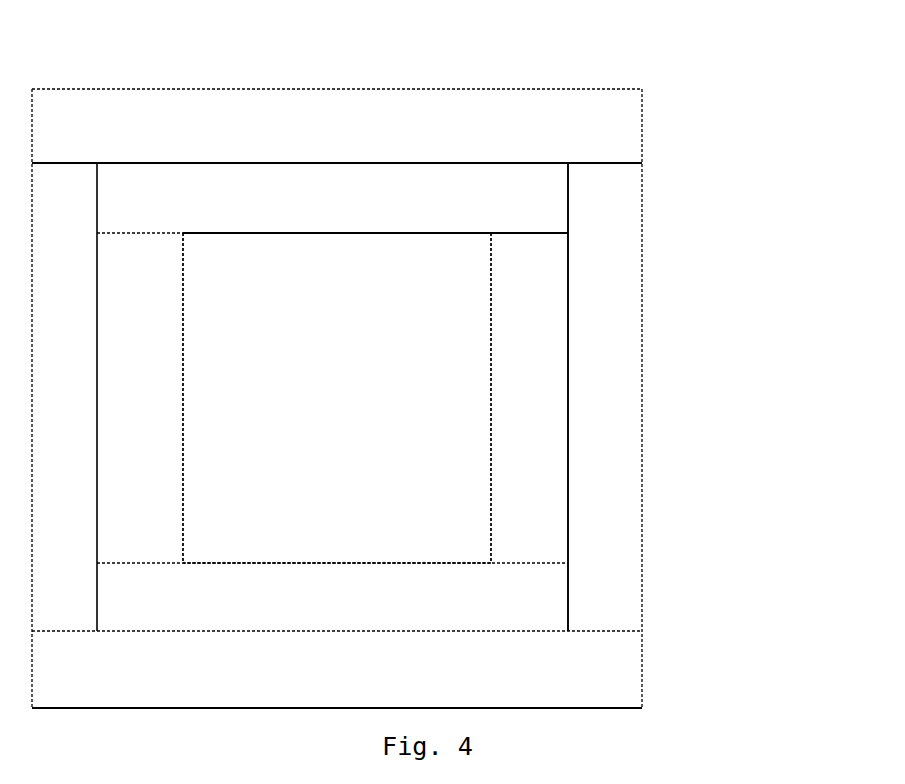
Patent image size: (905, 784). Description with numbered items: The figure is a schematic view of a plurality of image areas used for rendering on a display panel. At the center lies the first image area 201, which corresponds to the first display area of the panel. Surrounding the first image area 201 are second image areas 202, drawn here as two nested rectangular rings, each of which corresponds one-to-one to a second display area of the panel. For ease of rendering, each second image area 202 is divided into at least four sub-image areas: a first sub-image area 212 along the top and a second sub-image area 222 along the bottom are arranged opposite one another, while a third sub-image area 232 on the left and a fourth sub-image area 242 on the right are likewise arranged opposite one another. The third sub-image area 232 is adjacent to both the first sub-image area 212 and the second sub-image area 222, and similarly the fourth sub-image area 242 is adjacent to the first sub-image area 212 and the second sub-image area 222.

The first image area 201 is at (405, 287).
The second image area 202 is at (599, 317).
The first sub-image area 212 is at (327, 146).
The second sub-image area 222 is at (327, 610).
The third sub-image area 232 is at (80, 410).
The fourth sub-image area 242 is at (548, 410).